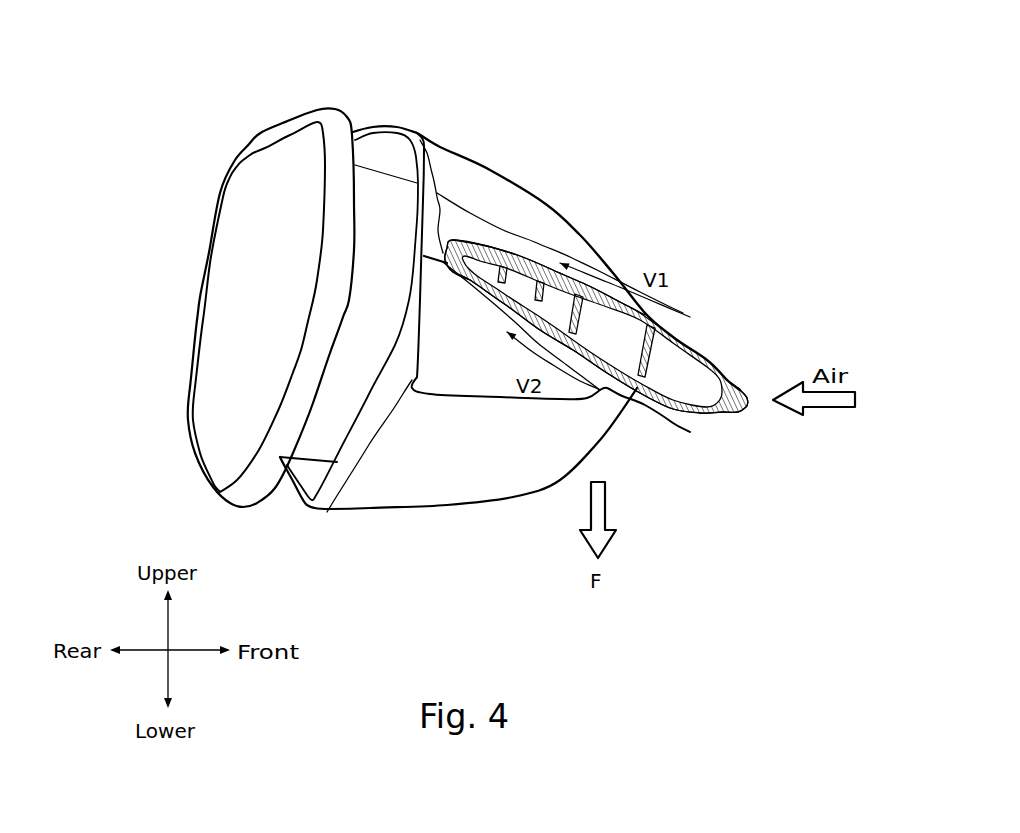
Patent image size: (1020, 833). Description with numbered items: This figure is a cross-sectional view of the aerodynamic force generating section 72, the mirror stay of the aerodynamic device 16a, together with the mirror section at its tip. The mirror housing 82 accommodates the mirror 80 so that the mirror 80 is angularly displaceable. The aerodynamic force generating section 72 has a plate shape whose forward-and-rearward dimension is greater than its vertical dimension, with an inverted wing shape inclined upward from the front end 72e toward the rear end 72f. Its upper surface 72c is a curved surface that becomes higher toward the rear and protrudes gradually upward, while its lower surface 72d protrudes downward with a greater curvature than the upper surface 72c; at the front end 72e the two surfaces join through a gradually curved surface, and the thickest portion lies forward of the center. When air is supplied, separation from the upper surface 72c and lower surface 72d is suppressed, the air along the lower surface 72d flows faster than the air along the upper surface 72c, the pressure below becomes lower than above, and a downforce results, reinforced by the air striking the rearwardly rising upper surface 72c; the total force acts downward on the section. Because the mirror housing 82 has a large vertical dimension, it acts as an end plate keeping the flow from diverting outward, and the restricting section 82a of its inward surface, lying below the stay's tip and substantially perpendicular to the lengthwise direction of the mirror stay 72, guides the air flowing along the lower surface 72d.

The mirror 80 is at (247, 143).
The mirror housing 82 is at (410, 128).
The restricting section 82a is at (460, 372).
The aerodynamic device 16a is at (697, 313).
The aerodynamic force generating section 72 is at (723, 366).
The upper surface 72c is at (528, 262).
The lower surface 72d is at (676, 410).
The front end 72e is at (748, 410).
The rear end 72f is at (441, 250).